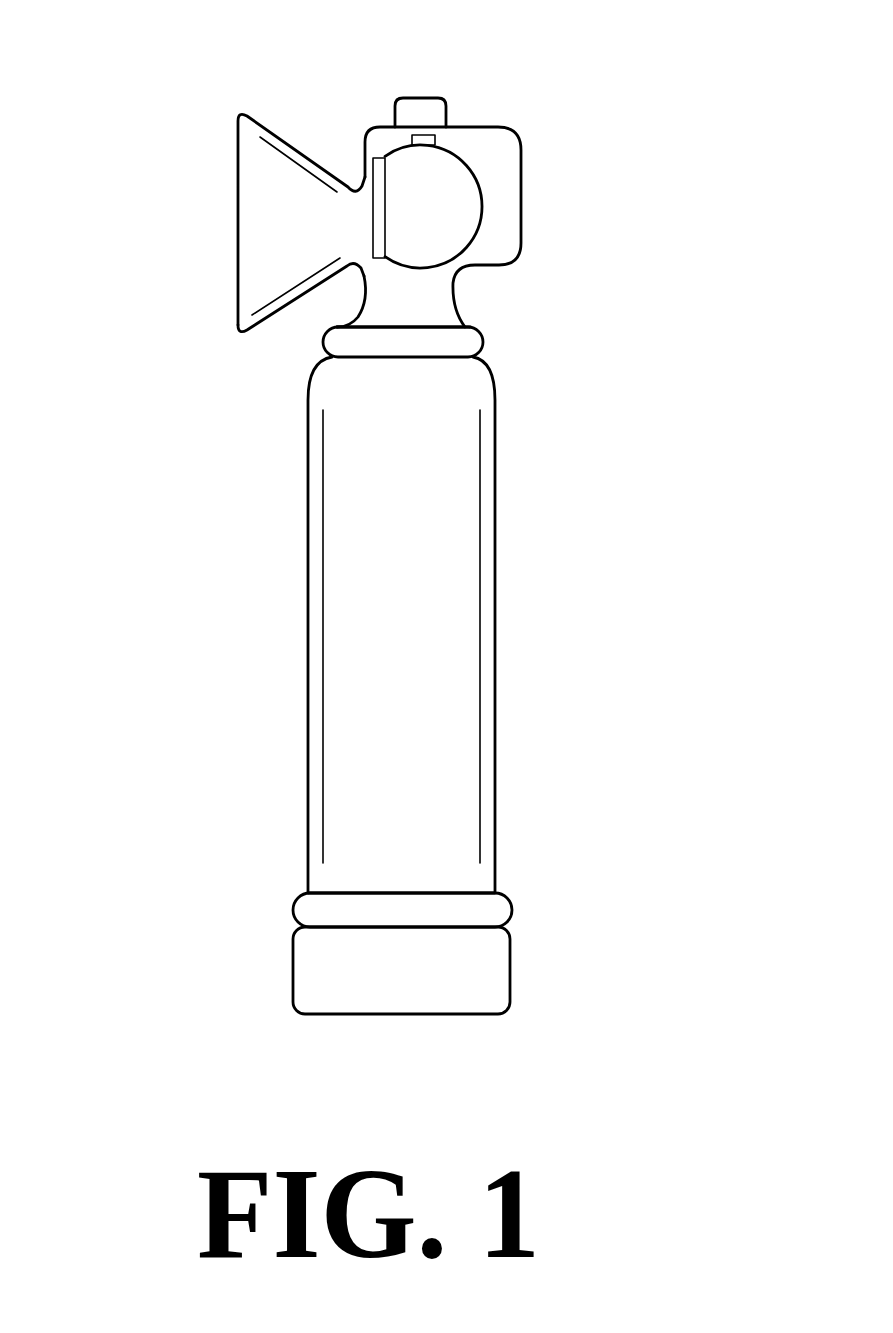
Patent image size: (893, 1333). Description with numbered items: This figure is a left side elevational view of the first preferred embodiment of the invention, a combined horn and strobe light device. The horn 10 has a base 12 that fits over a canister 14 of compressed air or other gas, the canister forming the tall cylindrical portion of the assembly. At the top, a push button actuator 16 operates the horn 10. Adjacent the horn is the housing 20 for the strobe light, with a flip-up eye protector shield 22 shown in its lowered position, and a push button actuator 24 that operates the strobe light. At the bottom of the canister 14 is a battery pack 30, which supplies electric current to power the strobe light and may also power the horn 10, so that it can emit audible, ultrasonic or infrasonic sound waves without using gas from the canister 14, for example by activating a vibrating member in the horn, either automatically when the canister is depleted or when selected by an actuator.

The horn 10 is at (237, 208).
The base 12 is at (453, 292).
The canister 14 is at (308, 627).
The push button actuator 16 is at (417, 98).
The housing 20 is at (480, 187).
The flip-up eye protector shield 22 is at (366, 213).
The push button actuator 24 is at (437, 135).
The battery pack 30 is at (510, 967).